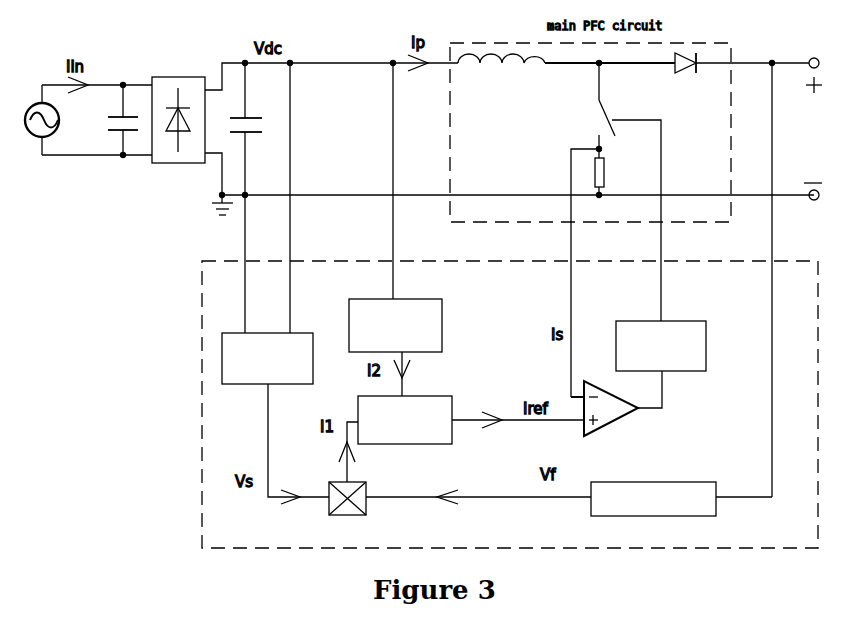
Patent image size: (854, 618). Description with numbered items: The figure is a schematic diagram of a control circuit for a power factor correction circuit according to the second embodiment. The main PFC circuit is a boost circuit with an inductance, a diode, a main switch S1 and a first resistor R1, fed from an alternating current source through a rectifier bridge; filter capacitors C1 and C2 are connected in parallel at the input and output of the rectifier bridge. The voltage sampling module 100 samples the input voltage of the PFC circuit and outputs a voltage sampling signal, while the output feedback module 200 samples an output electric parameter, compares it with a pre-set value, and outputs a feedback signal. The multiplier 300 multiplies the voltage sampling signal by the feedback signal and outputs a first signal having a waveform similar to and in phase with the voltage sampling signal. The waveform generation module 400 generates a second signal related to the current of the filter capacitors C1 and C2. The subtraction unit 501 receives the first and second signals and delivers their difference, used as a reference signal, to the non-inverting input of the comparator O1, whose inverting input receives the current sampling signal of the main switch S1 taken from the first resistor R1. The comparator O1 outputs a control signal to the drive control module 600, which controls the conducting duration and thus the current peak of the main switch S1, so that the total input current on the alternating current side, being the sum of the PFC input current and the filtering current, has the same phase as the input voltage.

The voltage sampling module 100 is at (267, 346).
The output feedback module 200 is at (681, 491).
The multiplier 300 is at (347, 511).
The waveform generation module 400 is at (395, 317).
The subtraction unit 501 is at (405, 431).
The drive control module 600 is at (661, 356).
The filter capacitor C1 is at (110, 120).
The filter capacitor C2 is at (241, 198).
The first resistor R1 is at (601, 272).
The main switch S1 is at (613, 192).
The comparator O1 is at (616, 410).